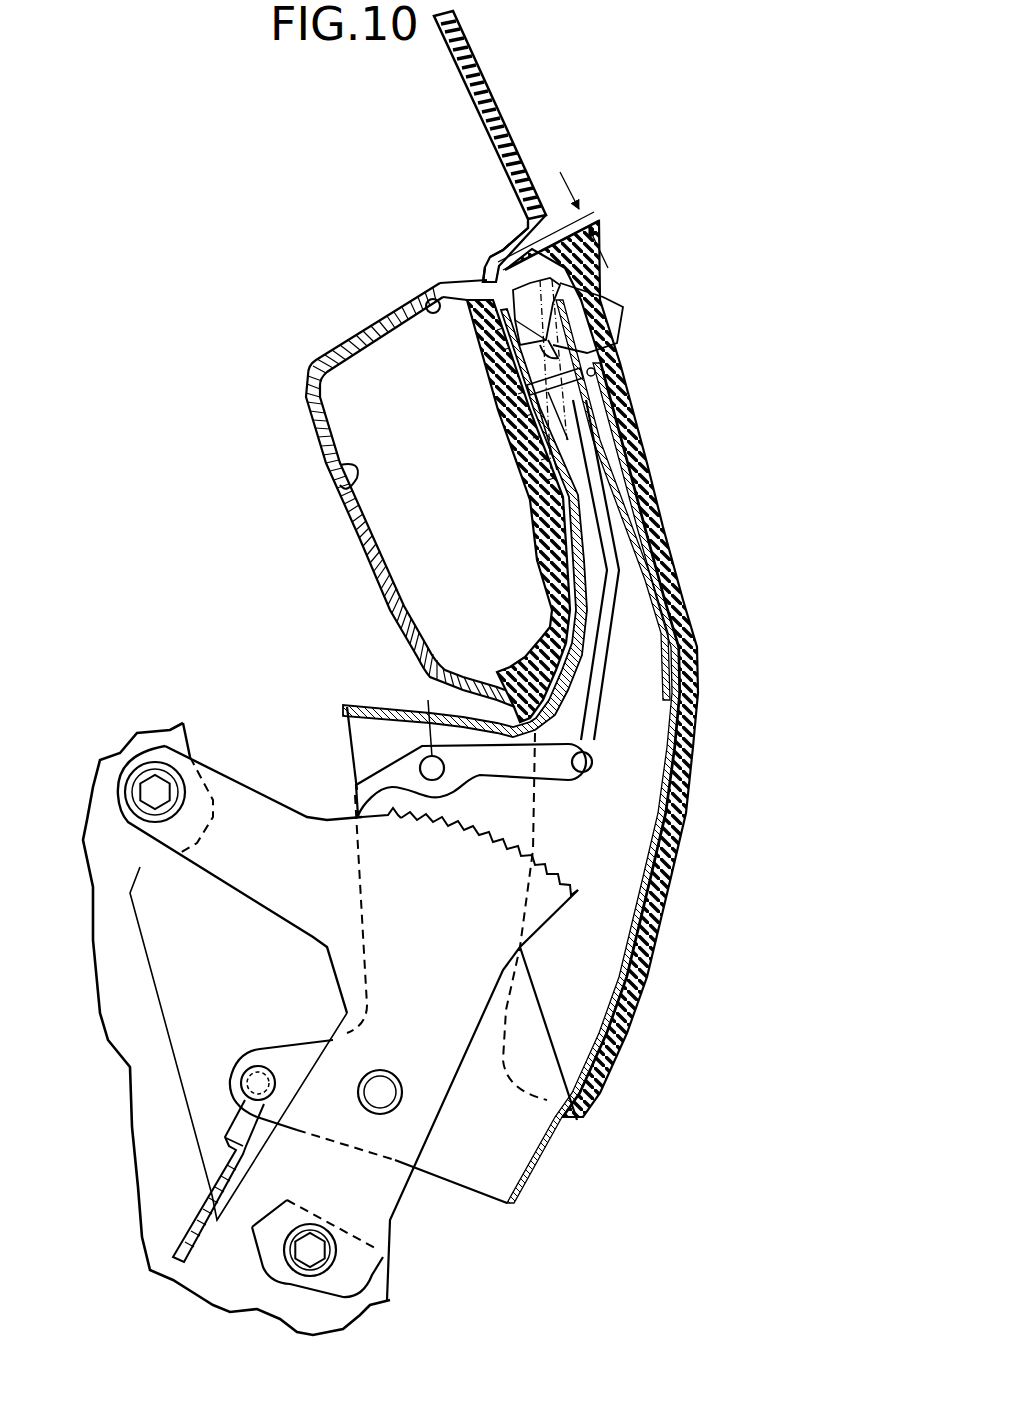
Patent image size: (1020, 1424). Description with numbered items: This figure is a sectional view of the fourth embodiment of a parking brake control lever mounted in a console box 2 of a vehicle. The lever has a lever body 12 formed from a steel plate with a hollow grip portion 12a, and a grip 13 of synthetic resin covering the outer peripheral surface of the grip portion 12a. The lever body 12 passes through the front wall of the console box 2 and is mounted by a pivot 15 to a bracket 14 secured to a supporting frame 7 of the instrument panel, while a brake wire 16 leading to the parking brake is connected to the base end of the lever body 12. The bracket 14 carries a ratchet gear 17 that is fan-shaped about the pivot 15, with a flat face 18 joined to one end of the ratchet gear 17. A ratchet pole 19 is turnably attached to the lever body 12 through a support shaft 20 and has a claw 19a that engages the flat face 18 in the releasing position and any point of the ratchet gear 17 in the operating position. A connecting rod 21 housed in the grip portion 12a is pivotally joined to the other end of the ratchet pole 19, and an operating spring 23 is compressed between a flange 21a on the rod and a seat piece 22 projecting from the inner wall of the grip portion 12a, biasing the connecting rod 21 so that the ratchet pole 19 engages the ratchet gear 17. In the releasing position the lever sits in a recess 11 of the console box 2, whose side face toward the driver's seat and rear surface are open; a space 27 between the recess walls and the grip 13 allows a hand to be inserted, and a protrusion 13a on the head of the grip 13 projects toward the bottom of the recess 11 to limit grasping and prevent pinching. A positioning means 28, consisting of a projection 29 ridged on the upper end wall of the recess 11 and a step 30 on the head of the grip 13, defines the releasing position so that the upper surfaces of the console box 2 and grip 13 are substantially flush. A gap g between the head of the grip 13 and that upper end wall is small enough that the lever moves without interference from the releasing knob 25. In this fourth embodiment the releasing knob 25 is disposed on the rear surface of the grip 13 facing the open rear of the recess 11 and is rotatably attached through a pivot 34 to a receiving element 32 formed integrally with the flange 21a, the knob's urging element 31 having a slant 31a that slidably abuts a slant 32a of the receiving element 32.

The console box 2 is at (522, 150).
The supporting frame 7 is at (107, 813).
The recess 11 is at (342, 480).
The lever body 12 is at (660, 882).
The grip portion 12a is at (600, 443).
The grip 13 is at (530, 470).
The protrusion 13a is at (443, 317).
The bracket 14 is at (412, 972).
The pivot 15 is at (393, 1093).
The brake wire 16 is at (190, 1220).
The ratchet gear 17 is at (533, 850).
The flat face 18 is at (393, 812).
The ratchet pole 19 is at (495, 770).
The claw 19a is at (370, 795).
The support shaft 20 is at (428, 700).
The connecting rod 21 is at (613, 610).
The flange 21a is at (547, 354).
The seat piece 22 is at (630, 470).
The operating spring 23 is at (528, 453).
The releasing knob 25 is at (547, 358).
The space 27 is at (440, 565).
The positioning means 28 is at (308, 215).
The projection 29 is at (490, 258).
The step 30 is at (483, 279).
The urging element 31 is at (510, 243).
The slant 31a is at (537, 357).
The receiving element 32 is at (593, 333).
The slant 32a is at (517, 327).
The pivot 34 is at (595, 374).
The gap g is at (584, 216).